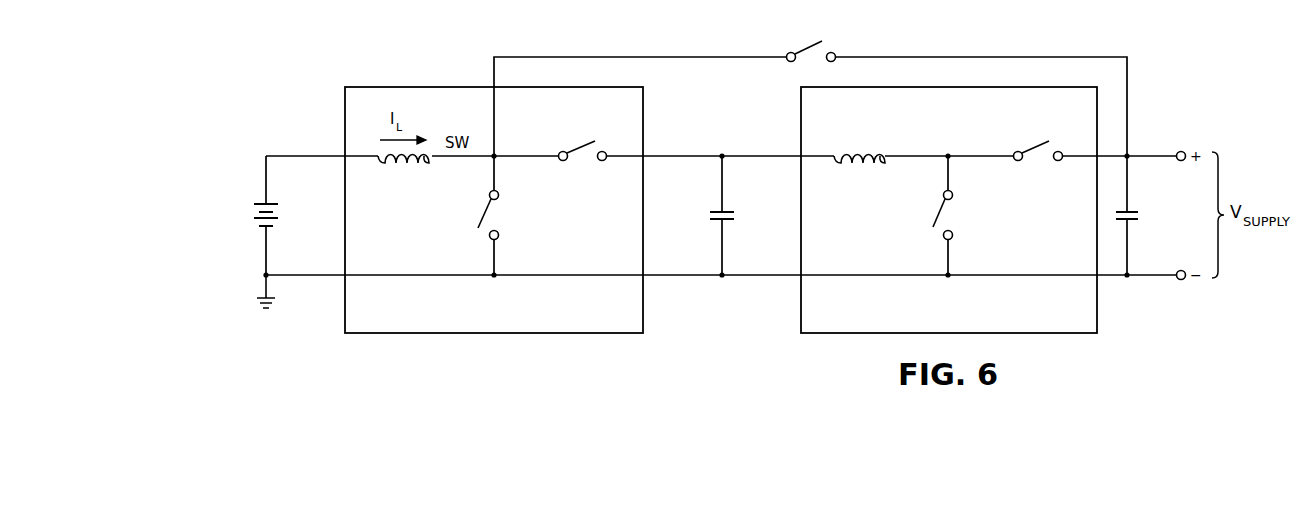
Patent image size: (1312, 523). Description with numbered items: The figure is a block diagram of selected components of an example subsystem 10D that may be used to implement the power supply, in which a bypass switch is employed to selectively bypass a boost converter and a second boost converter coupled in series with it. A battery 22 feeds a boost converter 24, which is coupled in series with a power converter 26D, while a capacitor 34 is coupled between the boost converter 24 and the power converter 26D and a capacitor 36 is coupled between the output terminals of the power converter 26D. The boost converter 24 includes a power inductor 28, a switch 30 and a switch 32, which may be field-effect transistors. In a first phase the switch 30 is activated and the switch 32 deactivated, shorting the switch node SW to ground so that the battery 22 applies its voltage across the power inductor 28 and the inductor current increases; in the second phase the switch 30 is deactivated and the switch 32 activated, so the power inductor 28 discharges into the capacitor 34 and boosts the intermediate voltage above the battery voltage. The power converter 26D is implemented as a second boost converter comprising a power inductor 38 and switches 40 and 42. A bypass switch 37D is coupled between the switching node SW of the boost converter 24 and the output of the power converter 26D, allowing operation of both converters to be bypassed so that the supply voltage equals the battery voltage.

The subsystem 10D is at (1177, 47).
The battery 22 is at (252, 213).
The boost converter 24 is at (424, 87).
The power converter 26D is at (1100, 294).
The power inductor 28 is at (406, 166).
The switch 30 is at (481, 213).
The switch 32 is at (582, 147).
The capacitor 34 is at (711, 214).
The capacitor 36 is at (1140, 213).
The bypass switch 37D is at (810, 46).
The power inductor 38 is at (855, 148).
The switch 40 is at (937, 213).
The switch 42 is at (1036, 146).